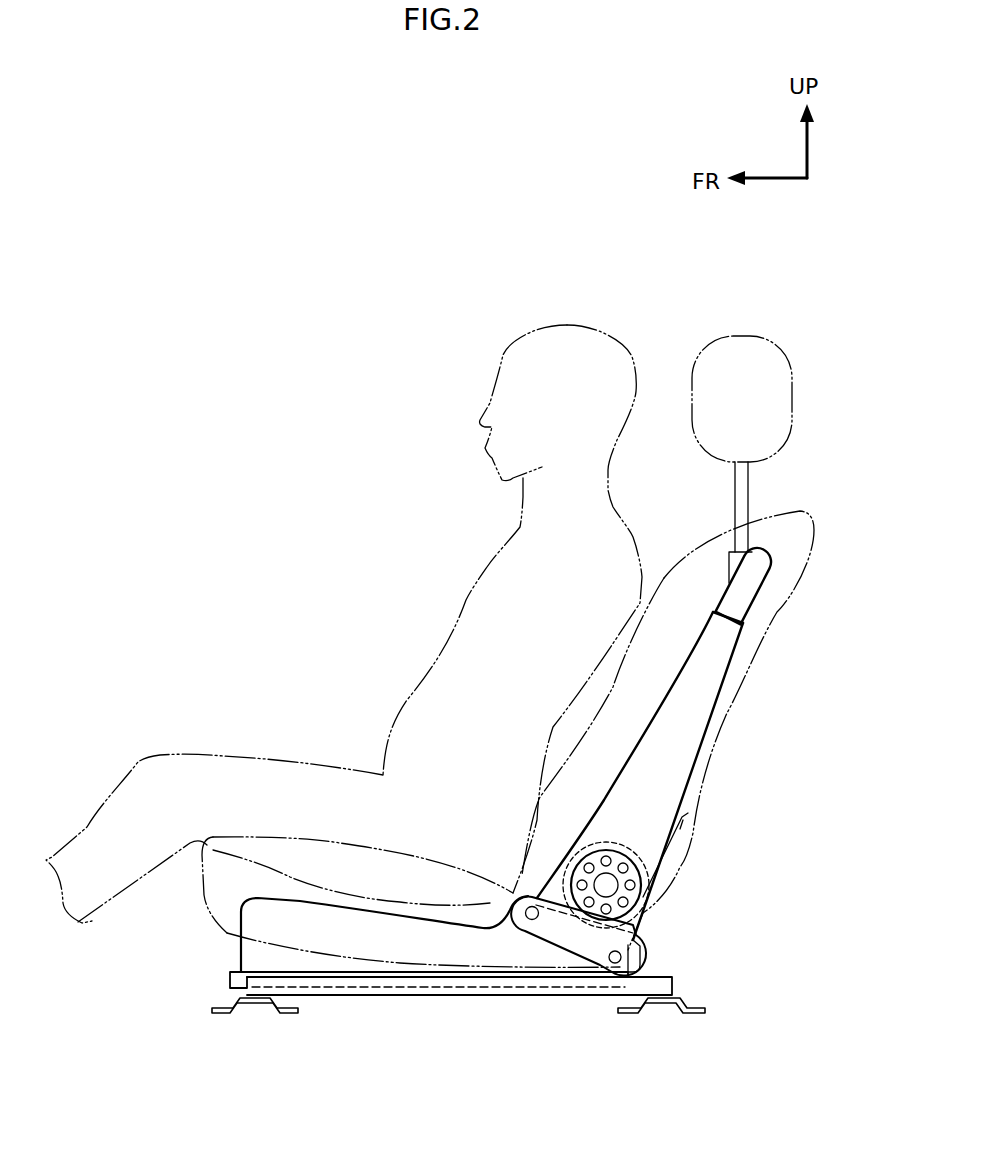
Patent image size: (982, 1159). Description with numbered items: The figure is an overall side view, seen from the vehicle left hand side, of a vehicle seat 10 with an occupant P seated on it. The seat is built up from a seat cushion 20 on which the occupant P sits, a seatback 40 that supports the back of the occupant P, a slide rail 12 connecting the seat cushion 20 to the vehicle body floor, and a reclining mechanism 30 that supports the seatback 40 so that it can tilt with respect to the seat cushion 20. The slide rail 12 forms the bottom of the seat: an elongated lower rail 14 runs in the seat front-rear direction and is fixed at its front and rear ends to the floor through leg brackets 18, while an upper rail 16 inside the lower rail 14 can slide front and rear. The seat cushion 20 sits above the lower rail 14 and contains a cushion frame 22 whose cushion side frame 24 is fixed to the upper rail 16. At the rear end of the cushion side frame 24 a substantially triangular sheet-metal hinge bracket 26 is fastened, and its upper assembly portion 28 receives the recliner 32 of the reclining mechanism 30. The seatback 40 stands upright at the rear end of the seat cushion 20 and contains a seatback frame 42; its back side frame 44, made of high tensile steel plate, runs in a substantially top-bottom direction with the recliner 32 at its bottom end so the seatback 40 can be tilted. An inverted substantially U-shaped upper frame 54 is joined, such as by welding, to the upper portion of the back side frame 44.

The vehicle seat 10 is at (487, 282).
The occupant P is at (446, 647).
The slide rail 12 is at (195, 992).
The lower rail 14 is at (431, 996).
The upper rail 16 is at (230, 978).
The leg bracket 18 is at (215, 1014).
The seat cushion 20 is at (205, 905).
The cushion frame 22 is at (515, 939).
The cushion side frame 24 is at (638, 958).
The hinge bracket 26 is at (643, 922).
The assembly portion 28 is at (639, 868).
The reclining mechanism 30 is at (606, 885).
The recliner 32 is at (570, 882).
The seatback 40 is at (731, 710).
The seatback frame 42 is at (746, 643).
The back side frame 44 is at (703, 748).
The upper frame 54 is at (763, 583).